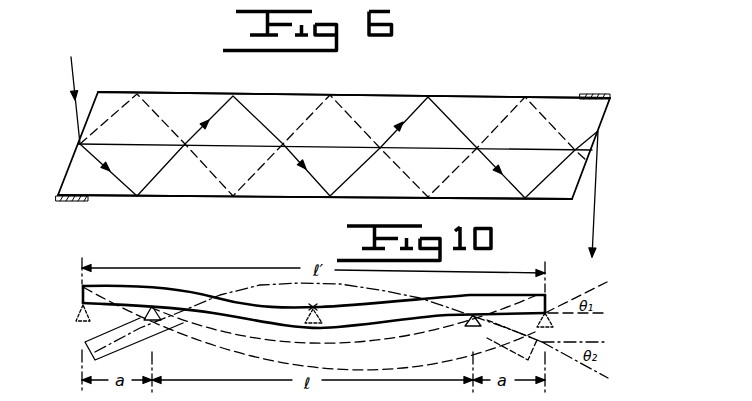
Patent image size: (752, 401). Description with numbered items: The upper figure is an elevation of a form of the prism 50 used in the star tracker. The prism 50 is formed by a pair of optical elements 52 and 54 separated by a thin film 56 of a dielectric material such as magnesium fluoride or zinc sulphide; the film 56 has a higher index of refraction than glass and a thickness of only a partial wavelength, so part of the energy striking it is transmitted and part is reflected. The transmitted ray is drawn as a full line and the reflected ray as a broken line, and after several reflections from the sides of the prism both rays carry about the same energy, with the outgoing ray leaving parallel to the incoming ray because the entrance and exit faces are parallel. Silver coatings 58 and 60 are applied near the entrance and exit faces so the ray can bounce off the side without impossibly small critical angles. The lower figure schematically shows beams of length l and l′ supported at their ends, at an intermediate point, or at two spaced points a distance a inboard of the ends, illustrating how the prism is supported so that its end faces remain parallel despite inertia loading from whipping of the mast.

The prism 50 is at (186, 203).
The optical element 52 is at (304, 97).
The optical element 54 is at (285, 184).
The thin film 56 is at (329, 151).
The silver coating 58 is at (66, 203).
The silver coating 60 is at (585, 95).